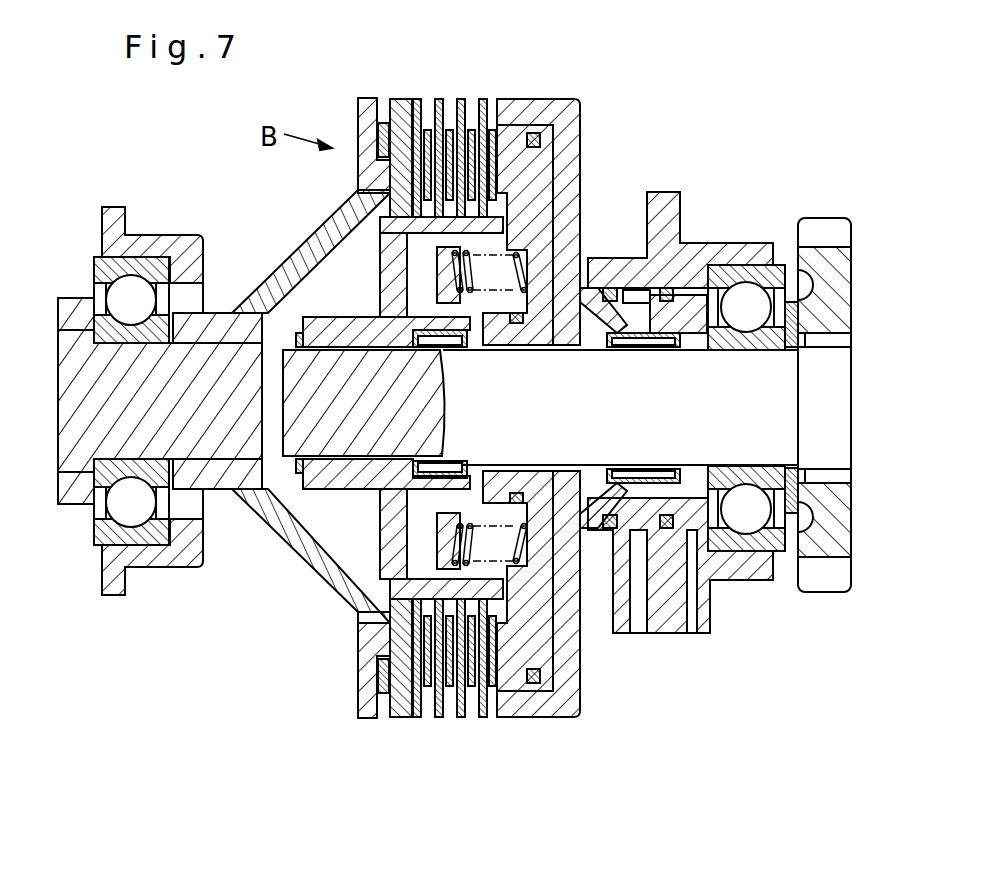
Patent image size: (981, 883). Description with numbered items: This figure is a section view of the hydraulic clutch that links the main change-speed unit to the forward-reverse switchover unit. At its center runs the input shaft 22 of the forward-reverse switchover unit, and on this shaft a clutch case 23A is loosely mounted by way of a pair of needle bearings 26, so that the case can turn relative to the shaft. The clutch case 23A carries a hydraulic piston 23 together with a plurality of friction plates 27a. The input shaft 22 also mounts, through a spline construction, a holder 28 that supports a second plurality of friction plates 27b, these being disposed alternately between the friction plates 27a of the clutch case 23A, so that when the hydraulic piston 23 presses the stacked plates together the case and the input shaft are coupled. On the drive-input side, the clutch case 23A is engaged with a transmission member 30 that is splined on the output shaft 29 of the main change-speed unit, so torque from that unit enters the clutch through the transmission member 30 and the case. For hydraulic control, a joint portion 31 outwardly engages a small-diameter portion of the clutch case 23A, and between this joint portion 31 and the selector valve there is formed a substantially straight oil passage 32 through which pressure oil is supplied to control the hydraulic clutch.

The input shaft 22 is at (345, 358).
The hydraulic piston 23 is at (548, 160).
The clutch case 23A is at (560, 98).
The needle bearings 26 is at (462, 348).
The friction plates 27a is at (483, 100).
The friction plates 27b is at (442, 718).
The holder 28 is at (380, 523).
The output shaft 29 is at (226, 345).
The transmission member 30 is at (292, 560).
The joint portion 31 is at (680, 600).
The oil passage 32 is at (640, 632).